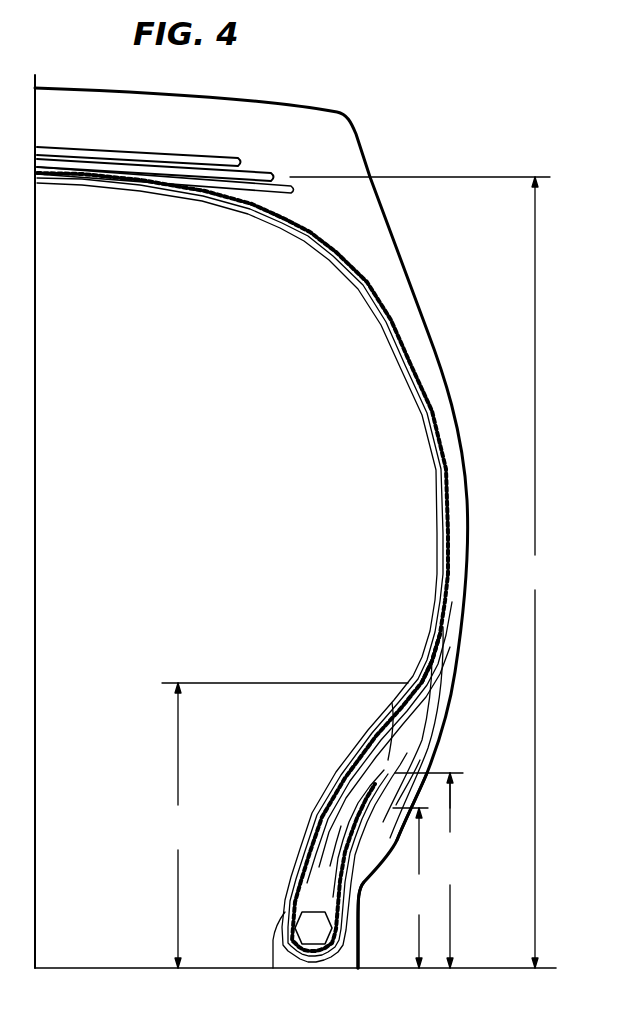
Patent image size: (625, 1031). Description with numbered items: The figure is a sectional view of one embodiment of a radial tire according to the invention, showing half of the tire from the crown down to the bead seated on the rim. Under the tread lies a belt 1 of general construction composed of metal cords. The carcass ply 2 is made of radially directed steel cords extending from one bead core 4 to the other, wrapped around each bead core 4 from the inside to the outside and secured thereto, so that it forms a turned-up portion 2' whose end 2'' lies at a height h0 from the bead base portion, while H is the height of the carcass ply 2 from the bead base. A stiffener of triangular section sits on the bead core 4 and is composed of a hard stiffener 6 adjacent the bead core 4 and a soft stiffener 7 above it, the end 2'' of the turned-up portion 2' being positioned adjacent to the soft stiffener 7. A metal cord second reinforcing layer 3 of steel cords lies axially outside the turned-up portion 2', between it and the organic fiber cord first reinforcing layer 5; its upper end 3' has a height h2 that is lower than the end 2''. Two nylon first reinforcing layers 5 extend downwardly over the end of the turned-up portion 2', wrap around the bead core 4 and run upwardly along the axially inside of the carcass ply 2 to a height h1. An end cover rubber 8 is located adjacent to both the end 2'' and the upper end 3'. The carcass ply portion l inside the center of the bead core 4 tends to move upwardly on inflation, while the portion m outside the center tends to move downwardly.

The belt 1 is at (240, 158).
The carcass ply 2 is at (242, 567).
The turned-up portion of the carcass ply 2' is at (323, 823).
The end of the turned-up portion 2'' is at (363, 734).
The metal cord second reinforcing layer 3 is at (371, 917).
The upper end of the second reinforcing layer 3' is at (406, 825).
The bead core 4 is at (300, 930).
The organic fiber cord first reinforcing layer 5 is at (443, 677).
The hard stiffener 6 is at (342, 832).
The soft stiffener 7 is at (417, 700).
The end cover rubber 8 is at (403, 770).
The carcass ply l is at (445, 485).
The height of the carcass H is at (420, 572).
The height of the end of the turned-up portion h0 is at (429, 870).
The height of the upper end of the first reinforcing layer h1 is at (285, 825).
The height of the upper end of the second reinforcing layer h2 is at (412, 888).
The carcass ply m is at (447, 788).